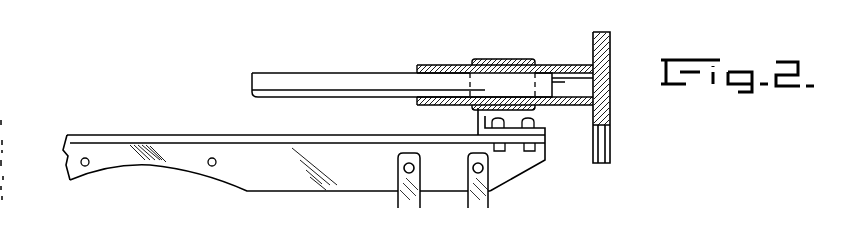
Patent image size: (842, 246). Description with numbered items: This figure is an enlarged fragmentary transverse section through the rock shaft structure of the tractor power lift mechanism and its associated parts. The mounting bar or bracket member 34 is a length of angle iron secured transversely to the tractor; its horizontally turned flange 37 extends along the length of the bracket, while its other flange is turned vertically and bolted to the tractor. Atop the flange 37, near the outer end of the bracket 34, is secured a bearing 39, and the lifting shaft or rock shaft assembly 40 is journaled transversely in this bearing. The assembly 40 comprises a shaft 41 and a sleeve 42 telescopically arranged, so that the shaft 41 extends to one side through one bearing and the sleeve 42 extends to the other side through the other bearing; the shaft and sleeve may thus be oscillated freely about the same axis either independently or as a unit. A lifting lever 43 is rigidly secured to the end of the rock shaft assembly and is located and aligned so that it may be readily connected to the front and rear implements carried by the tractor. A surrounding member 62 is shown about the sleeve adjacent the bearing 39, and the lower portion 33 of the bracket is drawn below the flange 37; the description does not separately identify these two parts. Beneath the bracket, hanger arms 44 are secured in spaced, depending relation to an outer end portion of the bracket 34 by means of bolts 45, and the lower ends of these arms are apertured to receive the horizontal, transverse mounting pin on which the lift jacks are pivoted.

The arm lower edge 33 is at (238, 180).
The mounting bar or bracket member 34 is at (176, 136).
The flange 37 is at (283, 137).
The bearing 39 is at (512, 60).
The lifting shaft or rock shaft assembly 40 is at (393, 62).
The shaft 41 is at (322, 73).
The sleeve 42 is at (550, 106).
The lifting lever 43 is at (611, 42).
The hanger arm 44 is at (468, 200).
The bolt 45 is at (472, 168).
The sleeve 62 is at (430, 66).